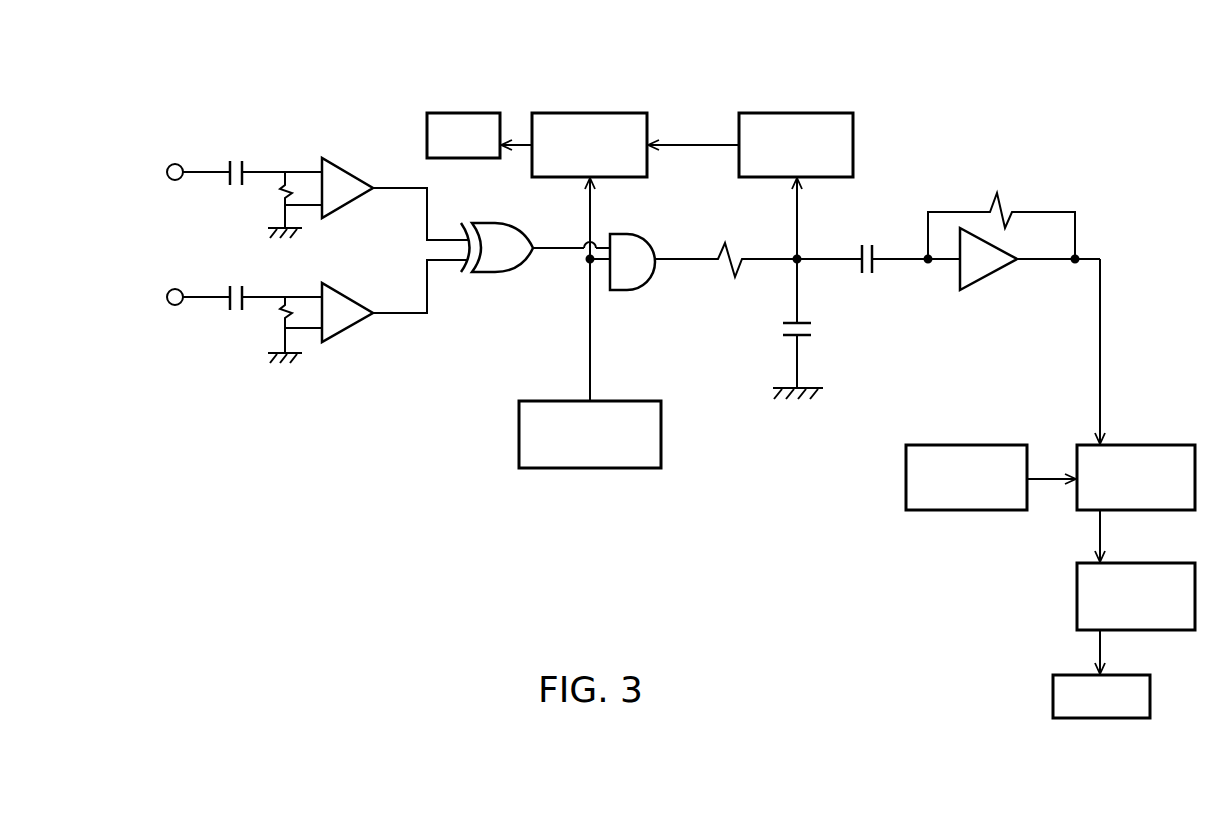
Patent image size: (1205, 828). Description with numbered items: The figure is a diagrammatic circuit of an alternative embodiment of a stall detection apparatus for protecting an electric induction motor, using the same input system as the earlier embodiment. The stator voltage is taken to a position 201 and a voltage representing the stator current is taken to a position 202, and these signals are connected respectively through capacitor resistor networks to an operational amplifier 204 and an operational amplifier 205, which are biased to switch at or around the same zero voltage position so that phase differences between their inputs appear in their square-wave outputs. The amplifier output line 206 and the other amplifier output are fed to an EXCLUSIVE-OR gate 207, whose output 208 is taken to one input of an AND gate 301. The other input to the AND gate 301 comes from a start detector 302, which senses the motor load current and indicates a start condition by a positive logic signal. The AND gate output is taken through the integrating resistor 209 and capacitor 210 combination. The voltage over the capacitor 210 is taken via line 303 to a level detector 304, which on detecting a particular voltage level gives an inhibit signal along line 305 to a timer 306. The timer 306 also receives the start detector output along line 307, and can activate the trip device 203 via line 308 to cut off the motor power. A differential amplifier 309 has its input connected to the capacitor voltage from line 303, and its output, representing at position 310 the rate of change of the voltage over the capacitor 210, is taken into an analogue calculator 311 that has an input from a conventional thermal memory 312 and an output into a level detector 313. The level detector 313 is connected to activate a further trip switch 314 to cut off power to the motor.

The position 201 is at (178, 152).
The position 202 is at (173, 288).
The trip device 203 is at (452, 112).
The operational amplifier 204 is at (330, 160).
The operational amplifier 205 is at (349, 354).
The first amplifier output line 206 is at (448, 230).
The EXCLUSIVE-OR gate 207 is at (502, 265).
The output 208 is at (563, 250).
The integrating resistor 209 is at (727, 268).
The capacitor 210 is at (798, 317).
The AND gate 301 is at (640, 263).
The start detector 302 is at (662, 446).
The line 303 is at (800, 230).
The level detector 304 is at (843, 112).
The line 305 is at (702, 142).
The timer 306 is at (598, 112).
The line 307 is at (504, 338).
The line 308 is at (514, 141).
The differential amplifier 309 is at (963, 307).
The position 310 is at (1100, 259).
The analogue calculator 311 is at (1138, 445).
The thermal memory 312 is at (925, 512).
The level detector 313 is at (1077, 598).
The trip switch 314 is at (1053, 695).